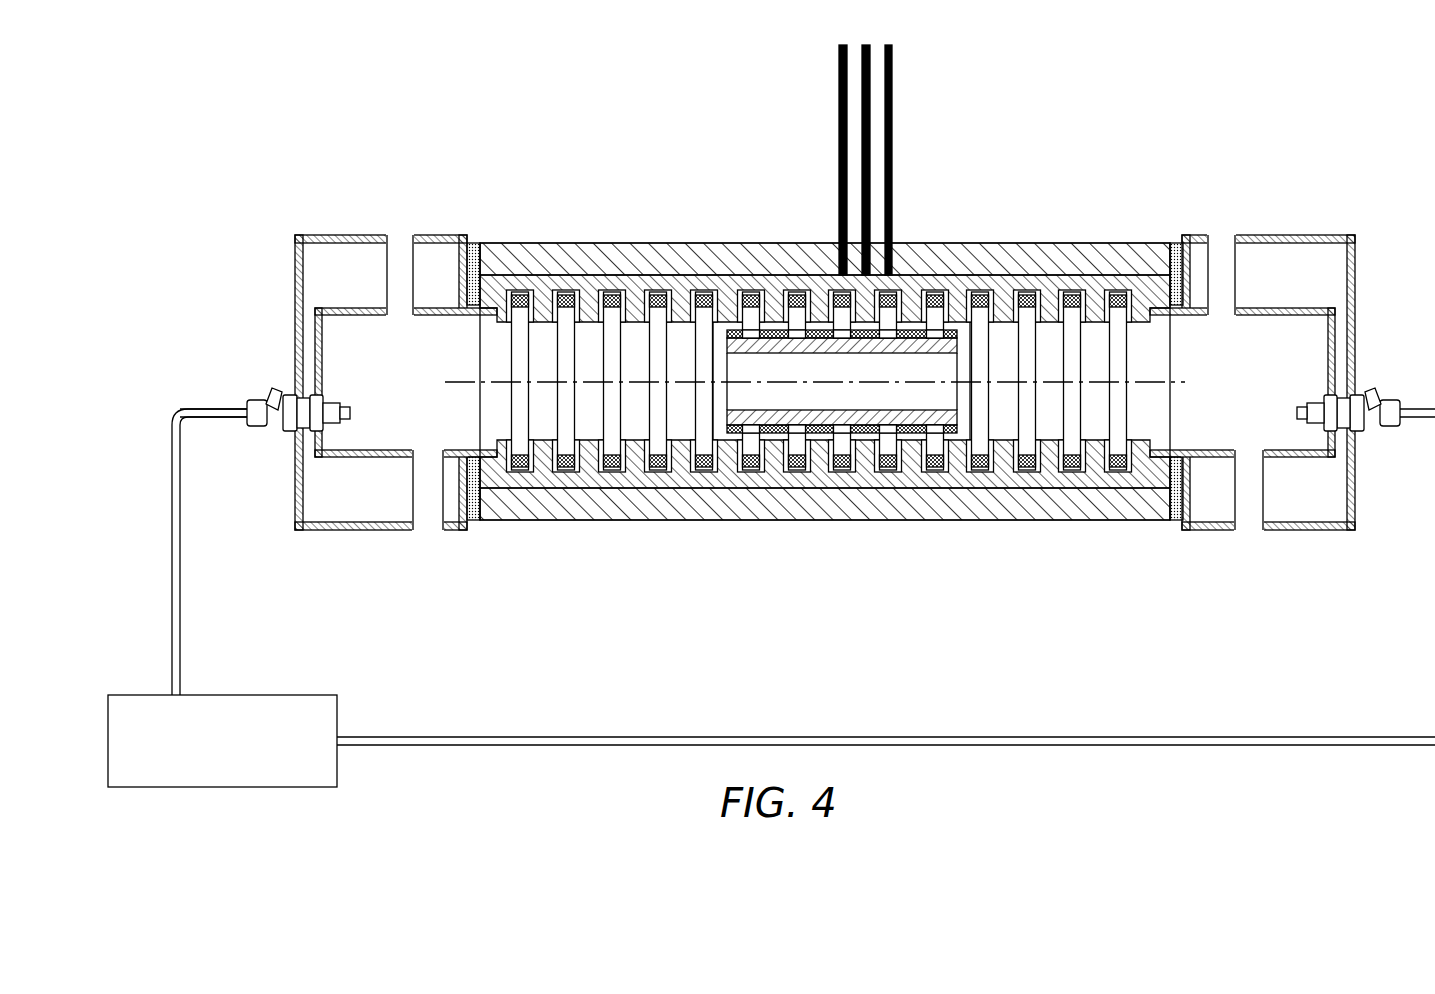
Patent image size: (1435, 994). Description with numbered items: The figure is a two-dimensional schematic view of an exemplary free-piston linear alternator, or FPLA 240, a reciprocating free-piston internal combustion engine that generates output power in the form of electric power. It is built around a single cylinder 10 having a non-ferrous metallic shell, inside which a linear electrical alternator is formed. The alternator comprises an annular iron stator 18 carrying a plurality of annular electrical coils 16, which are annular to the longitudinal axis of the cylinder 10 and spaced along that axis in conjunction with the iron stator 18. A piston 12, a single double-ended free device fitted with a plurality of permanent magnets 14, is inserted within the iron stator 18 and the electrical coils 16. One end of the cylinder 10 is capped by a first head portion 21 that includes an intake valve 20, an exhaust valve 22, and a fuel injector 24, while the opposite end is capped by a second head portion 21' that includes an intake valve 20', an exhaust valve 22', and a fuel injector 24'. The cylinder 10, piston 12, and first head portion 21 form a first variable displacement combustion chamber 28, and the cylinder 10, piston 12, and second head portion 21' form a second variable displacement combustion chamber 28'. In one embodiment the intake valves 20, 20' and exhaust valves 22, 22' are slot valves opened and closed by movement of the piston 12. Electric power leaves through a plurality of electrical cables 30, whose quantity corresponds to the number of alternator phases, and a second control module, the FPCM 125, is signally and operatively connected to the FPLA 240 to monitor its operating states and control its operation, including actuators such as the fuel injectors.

The cylinder 10 is at (1013, 243).
The piston 12 is at (815, 338).
The permanent magnets 14 is at (772, 330).
The electrical coils 16 is at (650, 295).
The iron stator 18 is at (580, 272).
The intake valve 20 is at (1210, 229).
The intake valve 20' is at (384, 228).
The first head portion 21 is at (1268, 335).
The second head portion 21' is at (381, 335).
The exhaust valve 22 is at (1266, 539).
The exhaust valve 22' is at (408, 540).
The fuel injector 24 is at (1366, 460).
The fuel injector 24' is at (265, 461).
The first variable displacement combustion chamber 28 is at (1242, 382).
The second variable displacement combustion chamber 28' is at (406, 382).
The electrical cables 30 is at (892, 205).
The second control module (FPCM) 125 is at (202, 773).
The free-piston linear alternator (FPLA) 240 is at (672, 605).